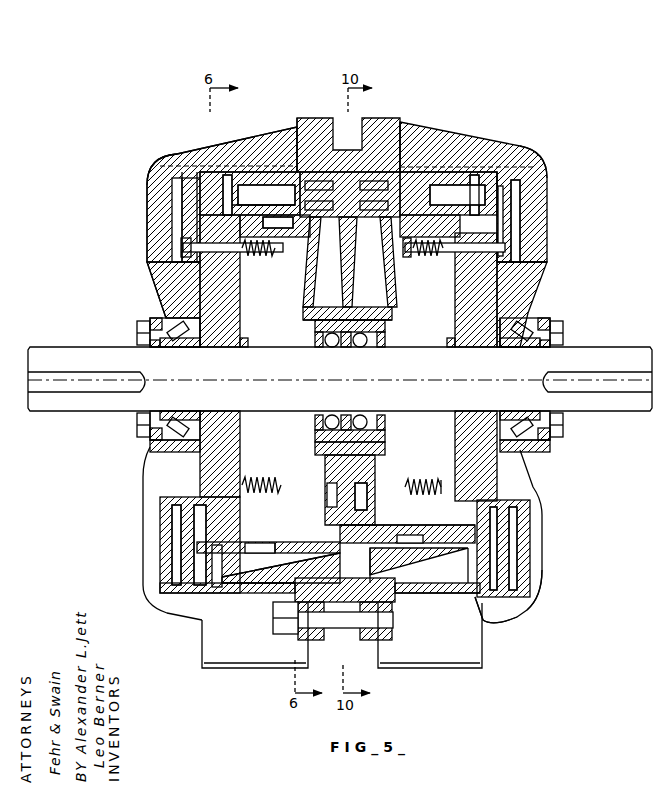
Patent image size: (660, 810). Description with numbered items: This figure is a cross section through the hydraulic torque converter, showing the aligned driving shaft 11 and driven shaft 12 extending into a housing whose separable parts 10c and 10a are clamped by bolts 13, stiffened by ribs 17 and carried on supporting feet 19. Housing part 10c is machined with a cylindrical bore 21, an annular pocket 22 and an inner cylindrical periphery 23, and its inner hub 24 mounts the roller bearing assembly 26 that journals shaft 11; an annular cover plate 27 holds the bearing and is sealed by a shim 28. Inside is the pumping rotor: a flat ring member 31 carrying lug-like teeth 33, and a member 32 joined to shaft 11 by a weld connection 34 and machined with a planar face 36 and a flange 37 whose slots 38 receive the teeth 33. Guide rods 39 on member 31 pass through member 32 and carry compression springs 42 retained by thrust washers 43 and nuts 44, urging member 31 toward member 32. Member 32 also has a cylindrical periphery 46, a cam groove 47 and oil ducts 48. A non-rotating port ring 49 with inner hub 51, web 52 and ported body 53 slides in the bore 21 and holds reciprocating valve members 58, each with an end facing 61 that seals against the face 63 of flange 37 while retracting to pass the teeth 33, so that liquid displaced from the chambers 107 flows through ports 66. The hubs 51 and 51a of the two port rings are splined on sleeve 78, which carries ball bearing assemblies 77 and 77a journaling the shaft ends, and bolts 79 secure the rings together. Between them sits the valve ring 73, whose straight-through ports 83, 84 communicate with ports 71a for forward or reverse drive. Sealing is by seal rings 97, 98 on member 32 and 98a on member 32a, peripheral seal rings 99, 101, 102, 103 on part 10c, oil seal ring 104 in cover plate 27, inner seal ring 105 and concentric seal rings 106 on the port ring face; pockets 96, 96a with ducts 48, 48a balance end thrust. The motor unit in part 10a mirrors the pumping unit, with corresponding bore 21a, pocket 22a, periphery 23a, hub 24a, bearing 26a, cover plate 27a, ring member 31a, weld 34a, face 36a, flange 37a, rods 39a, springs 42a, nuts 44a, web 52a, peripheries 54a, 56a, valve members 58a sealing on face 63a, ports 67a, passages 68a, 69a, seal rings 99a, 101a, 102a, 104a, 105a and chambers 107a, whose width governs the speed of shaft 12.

The driving shaft 11 is at (50, 403).
The driven shaft 12 is at (634, 403).
The bolts 13 is at (400, 628).
The supporting feet 19 is at (208, 652).
The ribs 17 is at (163, 167).
The cylindrical bore 21 is at (175, 180).
The annular pocket 22 is at (177, 207).
The inner annular cylindrical periphery 23 is at (172, 256).
The inner hub 24 is at (177, 447).
The roller bearing assembly 26 is at (162, 330).
The annular cover plate 27 is at (137, 330).
The shim 28 is at (167, 308).
The rotatable member 31 is at (172, 192).
The rotatable member 32 is at (238, 308).
The lug-like teeth 33 is at (211, 172).
The weld connection 34 is at (242, 342).
The planar annular face 36 is at (212, 557).
The flange 37 is at (213, 575).
The slots 38 is at (197, 170).
The guide rods 39 is at (183, 247).
The compression spring 42 is at (245, 255).
The thrust washer 43 is at (278, 256).
The nut 44 is at (303, 237).
The cylindrical periphery 46 is at (280, 542).
The cam groove 47 is at (253, 542).
The ducts 48 is at (213, 508).
The port ring 49 is at (257, 577).
The inner hub 51 is at (305, 313).
The outwardly extending web 52 is at (340, 285).
The annular ported body 53 is at (265, 575).
The valve member 58 is at (254, 173).
The end facing 61 is at (240, 185).
The face 63 is at (215, 593).
The ports 66 is at (245, 593).
The valve ring 73 is at (338, 168).
The ball bearing assembly 77 is at (320, 424).
The sleeve 78 is at (385, 325).
The bolts 79 is at (327, 490).
The straight through ports 83 is at (338, 603).
The straight through ports 84 is at (327, 505).
The pockets 96 is at (215, 325).
The seal ring 97 is at (213, 520).
The seal ring 98 is at (303, 542).
The peripheral seal ring 99 is at (197, 262).
The peripheral seal ring 101 is at (207, 170).
The peripheral seal ring 102 is at (229, 175).
The peripheral seal ring 103 is at (300, 158).
The oil seal ring 104 is at (152, 347).
The inner seal ring 105 is at (203, 337).
The concentric seal rings 106 is at (333, 150).
The chambers 107 is at (213, 535).
The housing part 10c is at (168, 170).
The housing part 10a is at (489, 172).
The ring 21a is at (517, 578).
The housing wall 22a is at (521, 213).
The shoulder 23a is at (515, 256).
The bearing cap 24a is at (533, 303).
The nut 26a is at (555, 340).
The bearing 27a is at (537, 318).
The groove 31a is at (520, 200).
The rotatable member 32a is at (457, 288).
The spacer 34a is at (450, 347).
The friction lining 36a is at (488, 550).
The cover 37a is at (513, 600).
The bolt 39a is at (463, 252).
The spring 42a is at (438, 480).
The spring seat 44a is at (413, 480).
The oil ducts 48a is at (455, 523).
The hub portion 51a is at (388, 317).
The bell wall 52a is at (357, 290).
The wedge ring 54a is at (437, 560).
The bottom plate 56a is at (443, 593).
The plate 58a is at (430, 173).
The slot 63a is at (497, 558).
The plate 67a is at (420, 593).
The bolt hole 68a is at (397, 200).
The hub edge 69a is at (395, 170).
The ports 71a is at (365, 602).
The ball bearing assembly 77a is at (386, 424).
The pockets 96a is at (523, 268).
The seal ring 98a is at (410, 248).
The cover 99a is at (523, 225).
The corner 101a is at (499, 167).
The bolt 102a is at (473, 175).
The spacer 104a is at (540, 347).
The spacer 105a is at (500, 347).
The chambers 107a is at (475, 597).